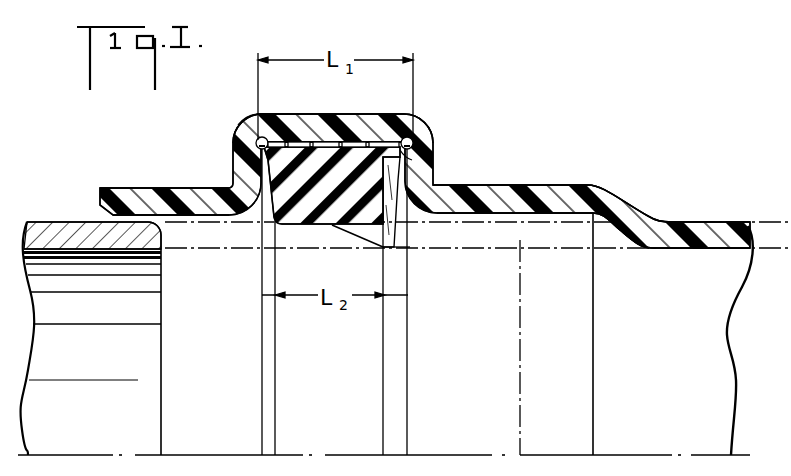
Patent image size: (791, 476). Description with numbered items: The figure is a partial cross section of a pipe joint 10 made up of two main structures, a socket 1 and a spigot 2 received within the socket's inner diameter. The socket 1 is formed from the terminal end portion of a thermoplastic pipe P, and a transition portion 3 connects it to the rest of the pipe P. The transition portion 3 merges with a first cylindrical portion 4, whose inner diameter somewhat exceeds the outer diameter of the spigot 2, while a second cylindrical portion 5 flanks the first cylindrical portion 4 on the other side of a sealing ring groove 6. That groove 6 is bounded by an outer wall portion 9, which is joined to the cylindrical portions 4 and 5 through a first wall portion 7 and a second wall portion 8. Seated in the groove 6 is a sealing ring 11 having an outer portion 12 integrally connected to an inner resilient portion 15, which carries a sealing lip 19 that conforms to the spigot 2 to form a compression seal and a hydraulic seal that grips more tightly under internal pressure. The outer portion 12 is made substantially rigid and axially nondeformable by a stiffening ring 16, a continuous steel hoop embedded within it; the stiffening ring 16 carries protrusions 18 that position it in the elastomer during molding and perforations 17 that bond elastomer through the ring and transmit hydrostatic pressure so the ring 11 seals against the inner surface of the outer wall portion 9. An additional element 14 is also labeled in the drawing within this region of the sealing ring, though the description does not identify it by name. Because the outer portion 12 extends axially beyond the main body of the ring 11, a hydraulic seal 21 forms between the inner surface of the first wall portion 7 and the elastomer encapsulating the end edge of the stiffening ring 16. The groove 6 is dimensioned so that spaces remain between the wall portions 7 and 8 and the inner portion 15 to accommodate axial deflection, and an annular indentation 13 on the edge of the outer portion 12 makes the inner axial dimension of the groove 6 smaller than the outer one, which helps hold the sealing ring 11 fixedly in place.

The socket 1 is at (498, 140).
The spigot 2 is at (66, 210).
The transition portion 3 is at (620, 200).
The first cylindrical portion 4 is at (524, 186).
The second cylindrical portion 5 is at (158, 188).
The thermoplastic pipe P is at (694, 222).
The sealing ring groove 6 is at (428, 121).
The first wall portion 7 is at (400, 190).
The second wall portion 8 is at (262, 190).
The outer wall portion 9 is at (268, 112).
The pipe joint 10 is at (112, 135).
The sealing ring 11 is at (332, 390).
The outer portion 12 is at (352, 140).
The annular indentation 13 is at (257, 143).
The insert element 14 is at (283, 140).
The inner resilient portion 15 is at (327, 233).
The stiffening ring 16 is at (388, 140).
The perforations 17 is at (312, 140).
The protrusions 18 is at (275, 134).
The sealing lip 19 is at (385, 242).
The hydraulic seal 21 is at (412, 160).